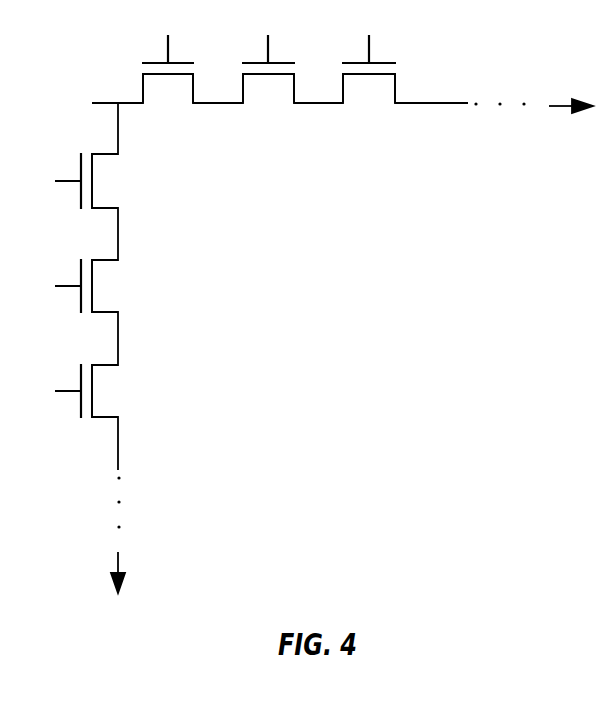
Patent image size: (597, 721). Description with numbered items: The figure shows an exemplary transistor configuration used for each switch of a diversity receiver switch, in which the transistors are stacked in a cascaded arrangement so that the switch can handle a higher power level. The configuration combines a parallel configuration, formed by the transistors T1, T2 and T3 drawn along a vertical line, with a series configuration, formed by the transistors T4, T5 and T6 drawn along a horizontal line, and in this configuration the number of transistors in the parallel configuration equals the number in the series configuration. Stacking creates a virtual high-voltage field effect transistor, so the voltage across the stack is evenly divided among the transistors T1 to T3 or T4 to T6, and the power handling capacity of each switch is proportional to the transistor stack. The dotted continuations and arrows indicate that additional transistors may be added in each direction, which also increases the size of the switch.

The transistor T1 is at (102, 391).
The transistor T2 is at (102, 286).
The transistor T3 is at (102, 181).
The transistor T4 is at (168, 80).
The transistor T5 is at (268, 80).
The transistor T6 is at (369, 80).